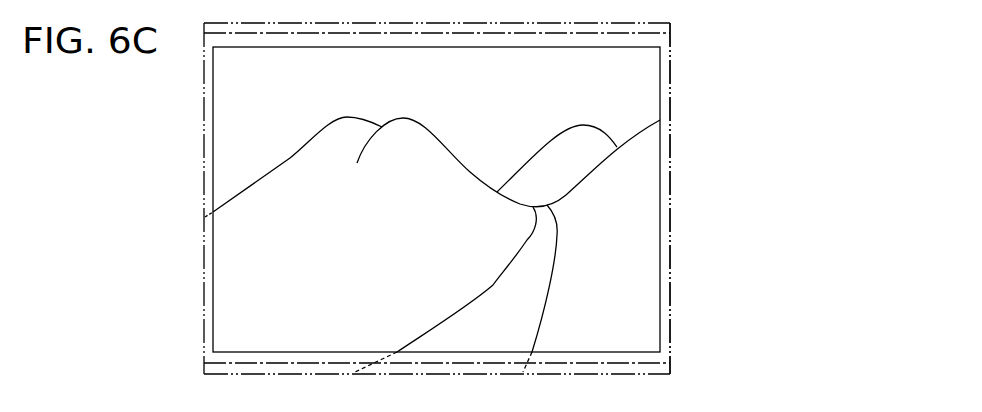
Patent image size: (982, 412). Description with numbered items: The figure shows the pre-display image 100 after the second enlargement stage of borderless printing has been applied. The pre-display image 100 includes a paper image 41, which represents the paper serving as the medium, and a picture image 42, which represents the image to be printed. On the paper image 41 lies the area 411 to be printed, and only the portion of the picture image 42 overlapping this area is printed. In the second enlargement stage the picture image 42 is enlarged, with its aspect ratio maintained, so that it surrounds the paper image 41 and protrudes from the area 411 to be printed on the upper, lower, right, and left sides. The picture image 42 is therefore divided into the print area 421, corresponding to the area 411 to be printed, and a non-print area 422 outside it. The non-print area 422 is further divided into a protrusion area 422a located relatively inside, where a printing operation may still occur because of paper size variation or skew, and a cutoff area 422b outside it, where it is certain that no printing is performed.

The pre-display image 100 is at (528, 200).
The picture image 42 is at (528, 200).
The paper image 41 is at (480, 207).
The area to be printed 411 is at (645, 88).
The print area 421 is at (640, 315).
The non-print area 422 is at (508, 370).
The protrusion area 422a is at (650, 357).
The cutoff area 422b is at (645, 368).